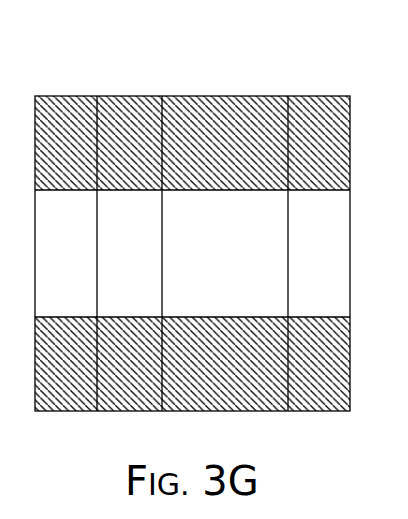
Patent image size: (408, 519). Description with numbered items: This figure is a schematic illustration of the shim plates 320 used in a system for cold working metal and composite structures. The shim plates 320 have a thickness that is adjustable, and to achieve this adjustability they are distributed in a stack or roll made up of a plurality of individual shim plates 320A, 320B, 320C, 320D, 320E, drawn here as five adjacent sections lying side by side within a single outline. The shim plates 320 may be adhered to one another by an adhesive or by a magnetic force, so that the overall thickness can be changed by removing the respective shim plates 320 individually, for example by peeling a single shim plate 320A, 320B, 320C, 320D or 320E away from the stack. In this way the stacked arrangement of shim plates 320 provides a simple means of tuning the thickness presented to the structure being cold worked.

The shim plates 320 is at (194, 57).
The shim plate 320A is at (66, 253).
The shim plate 320B is at (129, 253).
The shim plate 320C is at (193, 253).
The shim plate 320D is at (256, 253).
The shim plate 320E is at (319, 253).